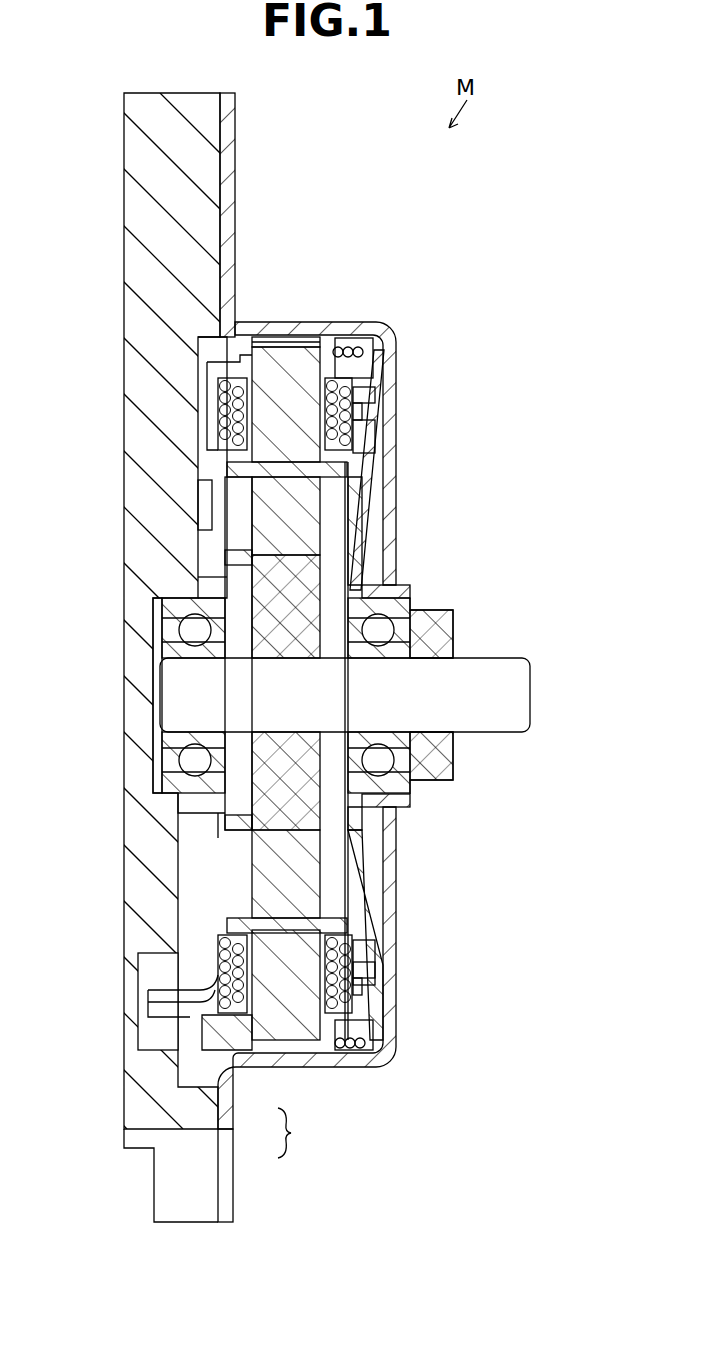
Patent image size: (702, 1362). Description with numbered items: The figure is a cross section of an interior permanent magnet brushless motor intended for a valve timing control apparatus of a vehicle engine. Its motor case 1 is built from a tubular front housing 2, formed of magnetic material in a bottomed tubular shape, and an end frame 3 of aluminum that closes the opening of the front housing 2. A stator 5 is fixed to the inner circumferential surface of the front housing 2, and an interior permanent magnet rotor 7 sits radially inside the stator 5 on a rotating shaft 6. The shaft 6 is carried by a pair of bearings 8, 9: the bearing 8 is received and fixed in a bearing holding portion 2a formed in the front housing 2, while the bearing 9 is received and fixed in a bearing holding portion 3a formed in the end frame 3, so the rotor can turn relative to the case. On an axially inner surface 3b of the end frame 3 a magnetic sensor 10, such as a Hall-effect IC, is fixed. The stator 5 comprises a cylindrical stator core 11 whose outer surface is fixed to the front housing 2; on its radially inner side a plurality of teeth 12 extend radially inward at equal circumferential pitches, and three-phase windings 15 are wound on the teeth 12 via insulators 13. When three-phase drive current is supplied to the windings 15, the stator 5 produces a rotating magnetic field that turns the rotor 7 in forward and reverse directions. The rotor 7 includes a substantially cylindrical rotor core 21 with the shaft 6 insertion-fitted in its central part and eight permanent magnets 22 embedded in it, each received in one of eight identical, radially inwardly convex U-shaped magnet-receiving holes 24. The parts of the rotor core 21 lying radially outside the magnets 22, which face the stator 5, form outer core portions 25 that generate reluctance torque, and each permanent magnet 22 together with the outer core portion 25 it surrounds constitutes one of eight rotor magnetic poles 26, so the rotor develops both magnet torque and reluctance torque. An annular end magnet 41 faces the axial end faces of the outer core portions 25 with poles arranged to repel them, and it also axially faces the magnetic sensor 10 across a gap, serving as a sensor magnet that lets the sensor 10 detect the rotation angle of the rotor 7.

The motor case 1 is at (294, 1133).
The tubular front housing 2 is at (210, 1130).
The bearing holding portion 2a is at (385, 585).
The end frame 3 is at (200, 1122).
The bearing holding portion 3a is at (200, 805).
The axially inner surface 3b is at (215, 395).
The stator 5 is at (296, 334).
The rotating shaft 6 is at (522, 710).
The interior permanent magnet rotor 7 is at (344, 853).
The bearing 8 is at (400, 604).
The bearing 9 is at (165, 600).
The magnetic sensor 10 is at (205, 515).
The stator core 11 is at (262, 352).
The teeth 12 is at (365, 448).
The insulators 13 is at (358, 350).
The windings 15 is at (358, 394).
The rotor core 21 is at (288, 640).
The permanent magnets 22 is at (235, 580).
The magnet-receiving holes 24 is at (355, 540).
The outer core portions 25 is at (300, 520).
The rotor magnetic poles 26 is at (250, 468).
The annular end magnet 41 is at (199, 500).